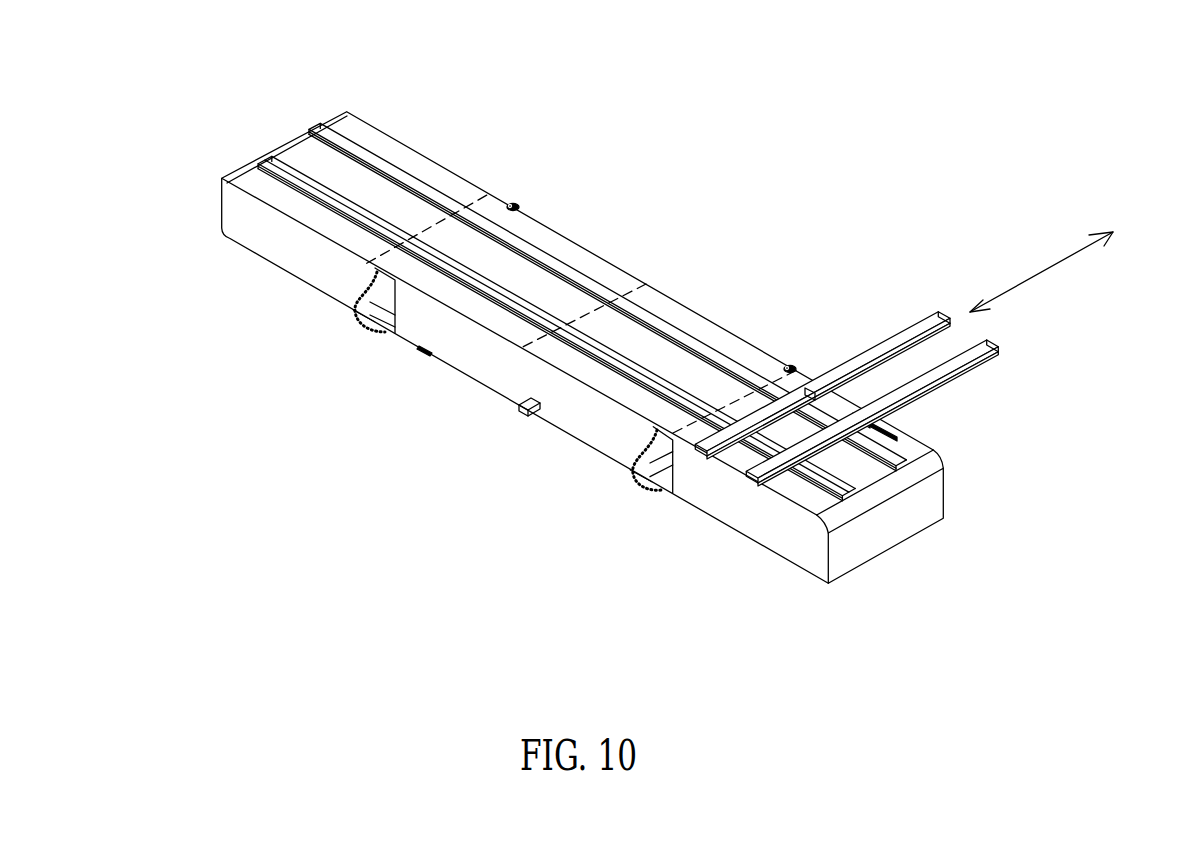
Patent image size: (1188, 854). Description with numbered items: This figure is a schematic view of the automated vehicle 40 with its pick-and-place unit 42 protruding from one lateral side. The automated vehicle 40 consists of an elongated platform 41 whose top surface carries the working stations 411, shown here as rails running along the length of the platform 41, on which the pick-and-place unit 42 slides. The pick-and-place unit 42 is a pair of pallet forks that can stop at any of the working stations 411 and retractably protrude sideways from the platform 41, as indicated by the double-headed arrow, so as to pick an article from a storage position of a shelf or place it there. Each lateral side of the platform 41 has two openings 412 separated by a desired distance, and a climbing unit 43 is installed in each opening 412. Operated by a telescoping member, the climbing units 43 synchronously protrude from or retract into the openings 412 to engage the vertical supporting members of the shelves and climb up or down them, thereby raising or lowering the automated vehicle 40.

The automated vehicle 40 is at (659, 340).
The platform 41 is at (927, 505).
The working station 411 is at (300, 150).
The opening 412 is at (374, 270).
The pick-and-place unit 42 is at (932, 378).
The climbing unit 43 is at (354, 310).